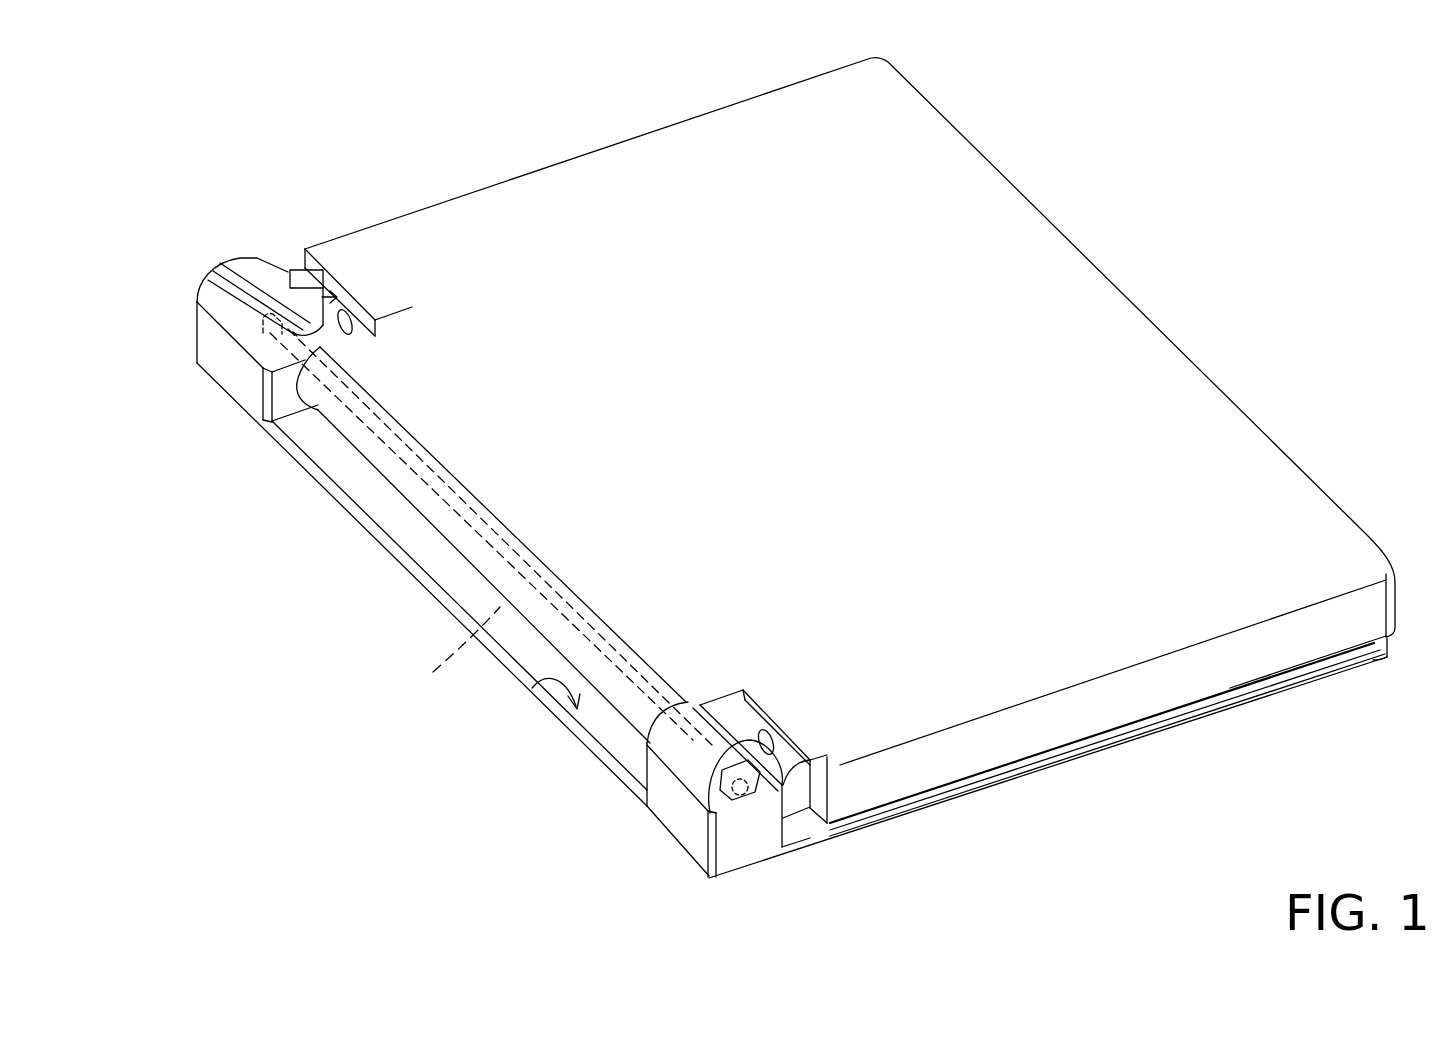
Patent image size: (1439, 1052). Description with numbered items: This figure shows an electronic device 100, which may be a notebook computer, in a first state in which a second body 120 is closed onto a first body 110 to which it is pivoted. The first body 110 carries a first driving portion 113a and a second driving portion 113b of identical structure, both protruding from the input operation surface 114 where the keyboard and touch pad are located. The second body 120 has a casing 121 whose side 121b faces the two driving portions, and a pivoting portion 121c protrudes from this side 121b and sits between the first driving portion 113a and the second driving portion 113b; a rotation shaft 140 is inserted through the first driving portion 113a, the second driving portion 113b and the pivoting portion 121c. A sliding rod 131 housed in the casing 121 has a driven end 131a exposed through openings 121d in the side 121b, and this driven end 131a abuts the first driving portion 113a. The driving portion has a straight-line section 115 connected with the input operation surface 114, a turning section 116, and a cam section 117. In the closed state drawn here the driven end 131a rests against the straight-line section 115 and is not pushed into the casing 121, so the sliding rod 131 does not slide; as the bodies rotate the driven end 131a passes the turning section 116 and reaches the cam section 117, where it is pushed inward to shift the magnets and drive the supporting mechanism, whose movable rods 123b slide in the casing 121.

The electronic device 100 is at (1436, 776).
The first body 110 is at (1180, 715).
The first driving portion 113a is at (725, 830).
The second driving portion 113b is at (225, 362).
The input operation surface 114 is at (556, 682).
The straight-line section 115 is at (788, 823).
The turning section 116 is at (815, 765).
The cam section 117 is at (735, 760).
The second body 120 is at (660, 95).
The casing 121 is at (958, 163).
The side 121b is at (228, 292).
The pivoting portion 121c is at (407, 482).
The openings 121d is at (326, 265).
The movable rods 123b is at (352, 302).
The sliding rod 131 is at (515, 564).
The driven end 131a is at (491, 542).
The rotation shaft 140 is at (439, 650).